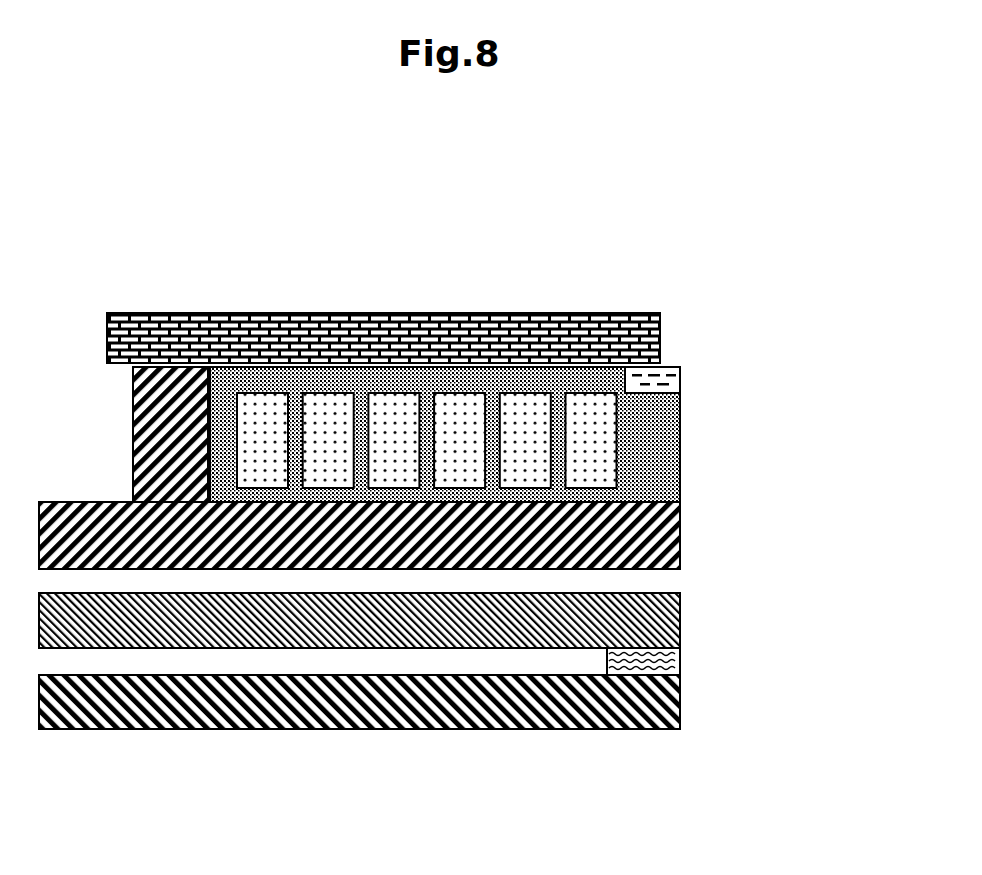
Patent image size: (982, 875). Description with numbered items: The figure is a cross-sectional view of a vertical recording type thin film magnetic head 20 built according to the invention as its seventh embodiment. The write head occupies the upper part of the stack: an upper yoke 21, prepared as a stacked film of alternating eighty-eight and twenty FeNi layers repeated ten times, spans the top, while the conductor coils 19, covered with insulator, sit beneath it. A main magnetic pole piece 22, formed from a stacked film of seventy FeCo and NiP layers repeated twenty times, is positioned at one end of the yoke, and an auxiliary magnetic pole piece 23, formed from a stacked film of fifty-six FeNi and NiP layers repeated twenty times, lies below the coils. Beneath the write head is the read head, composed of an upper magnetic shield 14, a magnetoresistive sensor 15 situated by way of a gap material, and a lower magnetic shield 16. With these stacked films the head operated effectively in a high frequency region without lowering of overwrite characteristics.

The vertical recording type thin film magnetic head 20 is at (700, 161).
The conductor coils 19 is at (392, 462).
The upper yoke 21 is at (660, 338).
The main magnetic pole piece 22 is at (680, 377).
The auxiliary magnetic pole piece 23 is at (680, 525).
The upper magnetic shield 14 is at (680, 632).
The magnetoresistive sensor 15 is at (680, 658).
The lower magnetic shield 16 is at (680, 713).